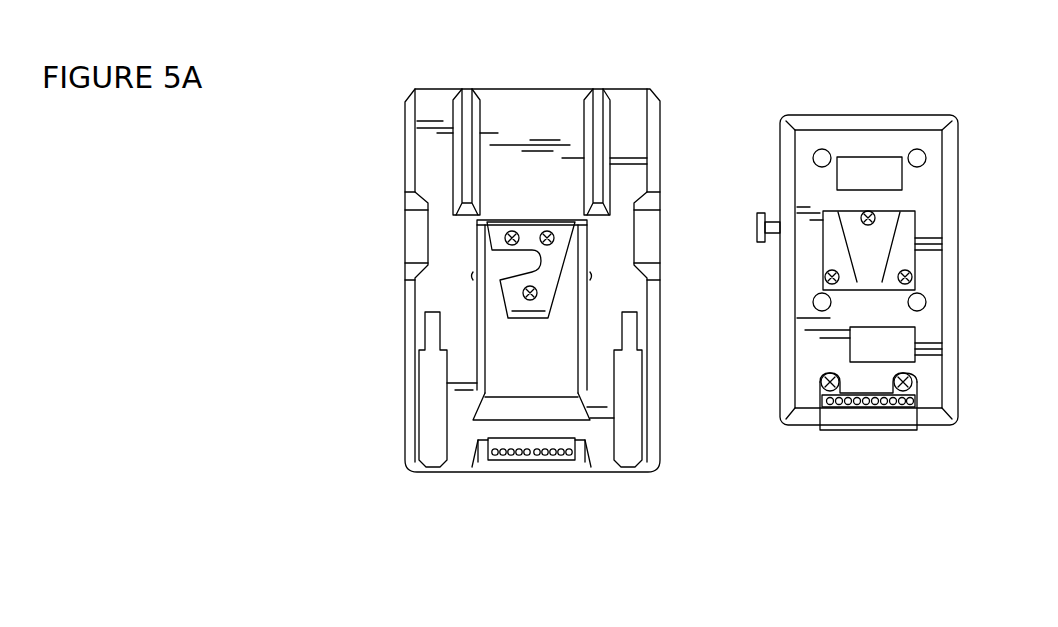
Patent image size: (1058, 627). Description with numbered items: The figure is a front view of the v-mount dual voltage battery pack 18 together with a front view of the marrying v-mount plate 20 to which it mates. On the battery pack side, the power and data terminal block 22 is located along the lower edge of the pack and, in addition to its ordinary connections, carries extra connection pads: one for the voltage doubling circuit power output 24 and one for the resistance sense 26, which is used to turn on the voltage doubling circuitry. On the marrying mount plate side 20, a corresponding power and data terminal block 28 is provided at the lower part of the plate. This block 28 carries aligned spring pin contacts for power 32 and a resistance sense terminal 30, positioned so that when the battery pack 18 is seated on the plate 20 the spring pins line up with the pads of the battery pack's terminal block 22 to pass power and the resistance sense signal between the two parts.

The v-mount dual voltage battery pack 18 is at (405, 150).
The marrying v-mount plate 20 is at (780, 158).
The power and data terminal block 22 is at (523, 462).
The voltage doubling circuit power output 24 is at (506, 463).
The resistance sense 26 is at (553, 463).
The power and data terminal block 28 is at (830, 408).
The resistance sense terminal 30 is at (840, 407).
The spring pin contacts for power 32 is at (895, 407).